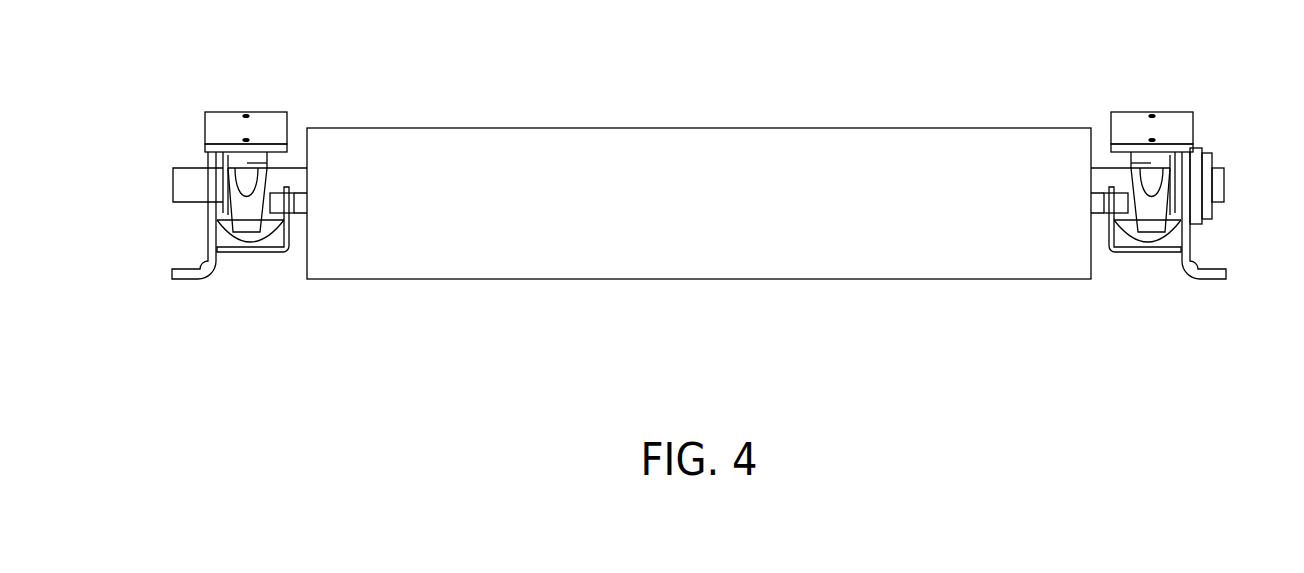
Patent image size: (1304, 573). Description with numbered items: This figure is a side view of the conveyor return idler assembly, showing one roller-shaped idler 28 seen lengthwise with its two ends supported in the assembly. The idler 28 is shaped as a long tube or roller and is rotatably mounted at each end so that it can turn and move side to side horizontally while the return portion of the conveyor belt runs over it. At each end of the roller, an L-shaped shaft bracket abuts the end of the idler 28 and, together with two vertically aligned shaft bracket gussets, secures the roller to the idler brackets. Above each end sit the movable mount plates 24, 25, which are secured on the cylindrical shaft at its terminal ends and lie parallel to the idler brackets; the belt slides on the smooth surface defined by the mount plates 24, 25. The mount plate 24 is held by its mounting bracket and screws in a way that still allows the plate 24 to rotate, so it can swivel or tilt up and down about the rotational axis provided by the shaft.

The movable mount plate 24 is at (1172, 115).
The movable mount plate 25 is at (226, 117).
The idler 28 is at (699, 128).